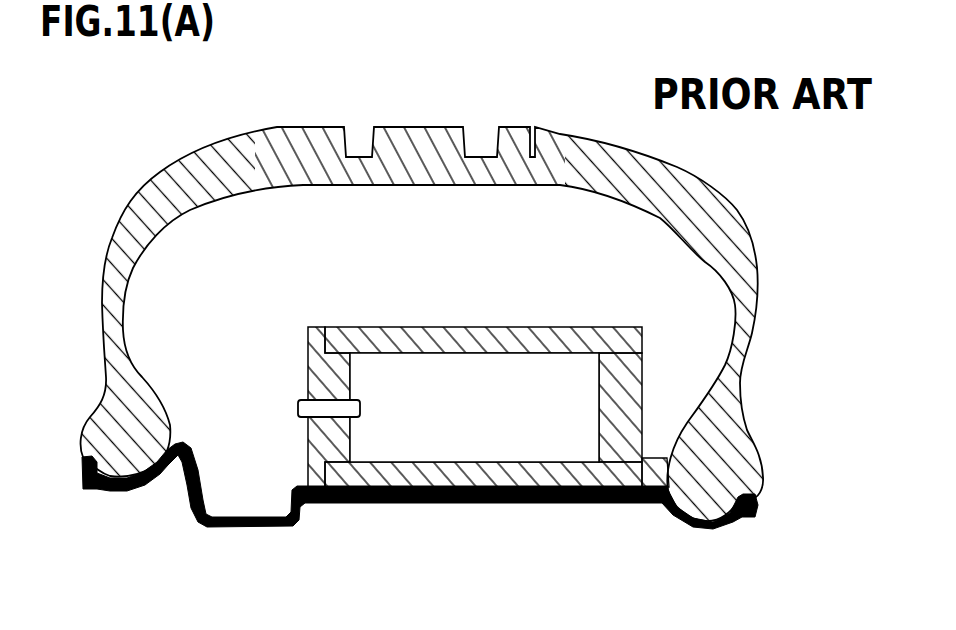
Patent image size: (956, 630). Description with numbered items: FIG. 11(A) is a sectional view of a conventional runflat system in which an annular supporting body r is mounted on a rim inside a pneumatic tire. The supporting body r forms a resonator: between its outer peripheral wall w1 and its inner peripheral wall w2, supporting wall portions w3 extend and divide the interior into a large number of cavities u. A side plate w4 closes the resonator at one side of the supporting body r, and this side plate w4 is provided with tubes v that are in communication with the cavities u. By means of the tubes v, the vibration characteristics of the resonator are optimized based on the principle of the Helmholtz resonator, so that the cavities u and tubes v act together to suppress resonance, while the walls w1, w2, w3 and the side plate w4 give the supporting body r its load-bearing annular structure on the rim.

The outer peripheral wall w1 is at (464, 334).
The inner peripheral wall w2 is at (537, 500).
The supporting wall portions w3 is at (623, 408).
The side plate w4 is at (333, 382).
The tubes v is at (303, 418).
The cavities u is at (423, 433).
The annular supporting body r is at (529, 415).